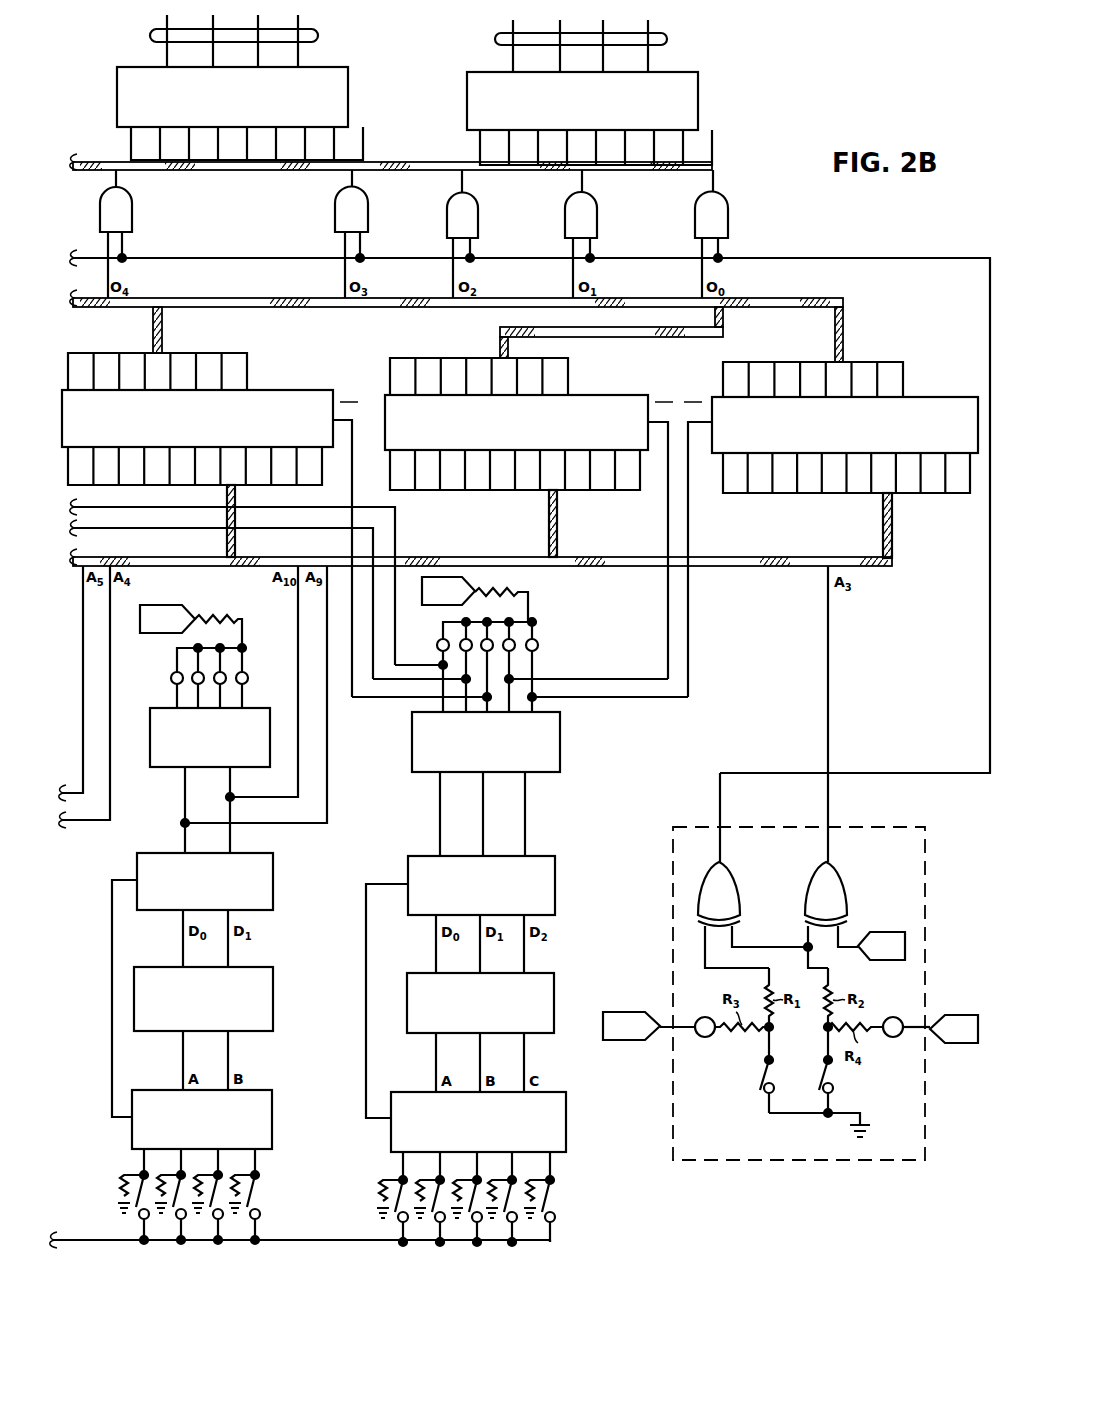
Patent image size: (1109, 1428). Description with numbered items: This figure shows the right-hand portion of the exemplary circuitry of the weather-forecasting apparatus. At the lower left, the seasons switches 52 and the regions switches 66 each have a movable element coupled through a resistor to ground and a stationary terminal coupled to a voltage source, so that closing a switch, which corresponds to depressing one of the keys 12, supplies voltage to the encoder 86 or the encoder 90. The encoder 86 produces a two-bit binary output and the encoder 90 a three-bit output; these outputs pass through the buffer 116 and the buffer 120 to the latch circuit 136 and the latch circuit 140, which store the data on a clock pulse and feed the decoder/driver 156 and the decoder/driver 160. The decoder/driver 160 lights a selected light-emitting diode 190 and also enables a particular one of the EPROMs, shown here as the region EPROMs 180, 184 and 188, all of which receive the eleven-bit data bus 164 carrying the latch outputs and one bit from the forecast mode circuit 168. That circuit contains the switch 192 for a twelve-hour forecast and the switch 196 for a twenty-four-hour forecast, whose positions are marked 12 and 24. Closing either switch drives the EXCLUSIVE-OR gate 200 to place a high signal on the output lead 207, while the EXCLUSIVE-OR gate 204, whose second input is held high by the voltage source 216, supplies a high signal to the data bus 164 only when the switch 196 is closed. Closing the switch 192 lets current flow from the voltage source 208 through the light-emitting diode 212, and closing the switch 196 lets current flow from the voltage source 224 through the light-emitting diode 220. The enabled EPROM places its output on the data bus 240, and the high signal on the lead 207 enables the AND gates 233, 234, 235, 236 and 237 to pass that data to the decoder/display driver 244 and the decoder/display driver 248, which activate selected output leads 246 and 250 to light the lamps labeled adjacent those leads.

The output leads 246 is at (318, 36).
The decoder/display driver 244 is at (348, 92).
The forecast indicator display 250 is at (667, 40).
The decoder/display driver 248 is at (698, 95).
The AND gate 233 is at (132, 210).
The AND gate 234 is at (335, 218).
The AND gate 235 is at (478, 214).
The AND gate 236 is at (597, 214).
The AND gate 237 is at (728, 214).
The data bus 240 is at (318, 307).
The erasable programmable read only memory 180 is at (293, 390).
The erasable programmable read only memory 184 is at (628, 395).
The erasable programmable read only memory 188 is at (928, 395).
The data bus 164 is at (640, 567).
The light-emitting diode 190 is at (436, 645).
The decoder/driver 156 is at (163, 767).
The decoder/driver 160 is at (412, 762).
The latch circuit 136 is at (277, 872).
The latch circuit 140 is at (555, 903).
The buffer 116 is at (273, 988).
The buffer 120 is at (554, 994).
The encoder 86 is at (272, 1117).
The encoder 90 is at (566, 1117).
The season selector switches 52 is at (265, 1196).
The switches 66 is at (562, 1195).
The output lead 207 is at (910, 772).
The EXCLUSIVE-OR gate 200 is at (742, 877).
The EXCLUSIVE-OR gate 204 is at (848, 877).
The voltage source 216 is at (888, 930).
The voltage source 208 is at (609, 1042).
The light-emitting diode 212 is at (714, 1040).
The light-emitting diode 220 is at (893, 1017).
The voltage source 224 is at (956, 1015).
The switch 192 is at (756, 1077).
The switch 196 is at (835, 1077).
The forecast mode circuit 168 is at (793, 1011).
The keys 12 is at (765, 1131).
The 24-hour switch position 24 is at (828, 1131).